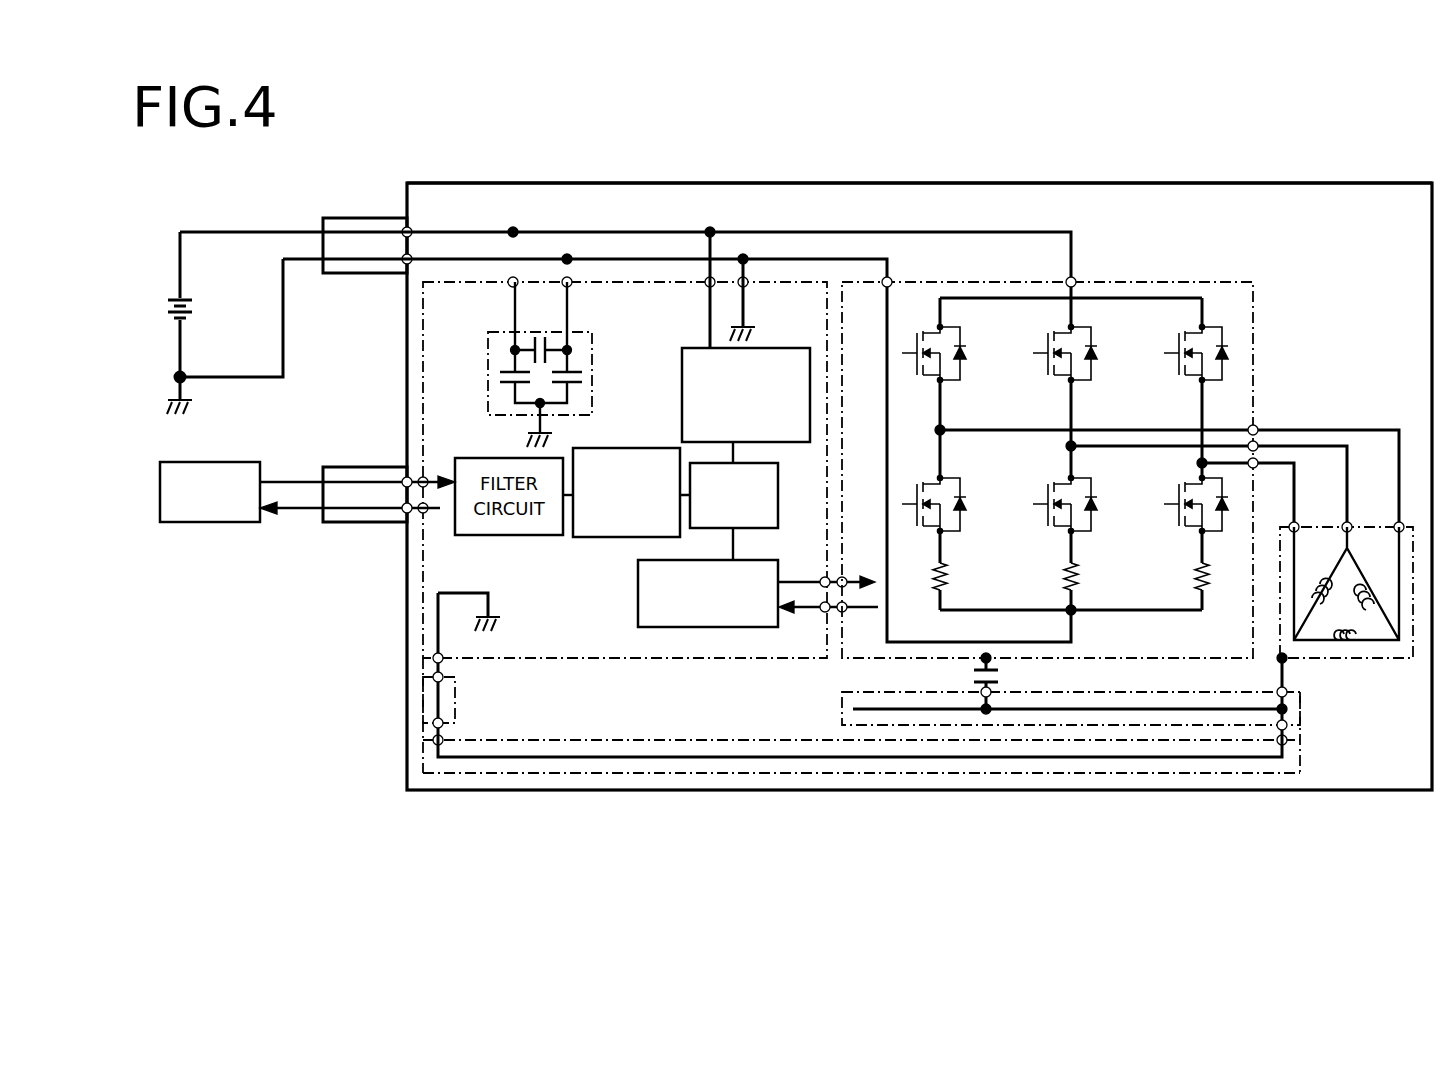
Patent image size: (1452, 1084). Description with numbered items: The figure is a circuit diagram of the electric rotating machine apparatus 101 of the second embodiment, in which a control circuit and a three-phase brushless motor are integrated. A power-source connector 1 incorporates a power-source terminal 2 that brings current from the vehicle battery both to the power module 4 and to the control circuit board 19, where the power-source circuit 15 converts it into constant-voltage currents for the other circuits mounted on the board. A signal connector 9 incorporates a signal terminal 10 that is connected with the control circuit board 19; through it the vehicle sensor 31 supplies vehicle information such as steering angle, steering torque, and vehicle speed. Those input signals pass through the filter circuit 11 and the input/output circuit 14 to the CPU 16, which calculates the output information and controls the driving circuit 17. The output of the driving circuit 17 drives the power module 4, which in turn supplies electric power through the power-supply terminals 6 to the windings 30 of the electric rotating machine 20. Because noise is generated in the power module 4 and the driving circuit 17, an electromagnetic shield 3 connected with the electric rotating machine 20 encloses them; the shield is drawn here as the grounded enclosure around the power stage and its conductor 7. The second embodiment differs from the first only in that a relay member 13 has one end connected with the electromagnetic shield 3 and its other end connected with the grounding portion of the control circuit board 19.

The electric rotating machine apparatus 101 is at (455, 183).
The power-source connector 1 is at (358, 218).
The power-source terminal 2 is at (550, 258).
The control circuit board 19 is at (773, 282).
The power module 4 is at (1133, 280).
The electric rotating machine 20 is at (1333, 300).
The power-supply terminals 6 is at (1350, 430).
The signal connector 9 is at (358, 467).
The signal terminal 10 is at (424, 512).
The filter circuit 11 is at (537, 540).
The power-source circuit 15 is at (700, 348).
The CPU 16 is at (692, 463).
The vehicle sensor 31 is at (193, 523).
The input/output circuit 14 is at (580, 537).
The driving circuit 17 is at (638, 618).
The relay member 13 is at (455, 710).
The electromagnetic shield 3 is at (518, 740).
The ground wiring 7 is at (843, 717).
The windings 30 is at (1365, 662).